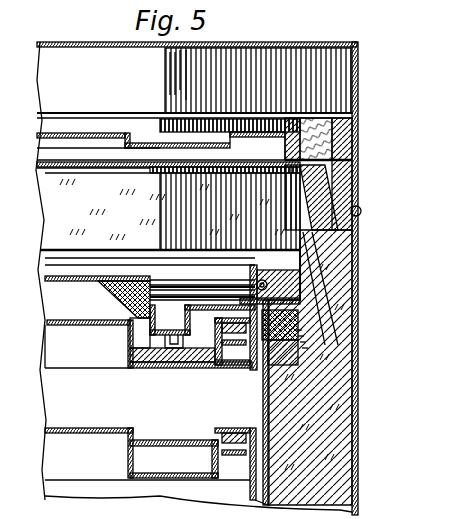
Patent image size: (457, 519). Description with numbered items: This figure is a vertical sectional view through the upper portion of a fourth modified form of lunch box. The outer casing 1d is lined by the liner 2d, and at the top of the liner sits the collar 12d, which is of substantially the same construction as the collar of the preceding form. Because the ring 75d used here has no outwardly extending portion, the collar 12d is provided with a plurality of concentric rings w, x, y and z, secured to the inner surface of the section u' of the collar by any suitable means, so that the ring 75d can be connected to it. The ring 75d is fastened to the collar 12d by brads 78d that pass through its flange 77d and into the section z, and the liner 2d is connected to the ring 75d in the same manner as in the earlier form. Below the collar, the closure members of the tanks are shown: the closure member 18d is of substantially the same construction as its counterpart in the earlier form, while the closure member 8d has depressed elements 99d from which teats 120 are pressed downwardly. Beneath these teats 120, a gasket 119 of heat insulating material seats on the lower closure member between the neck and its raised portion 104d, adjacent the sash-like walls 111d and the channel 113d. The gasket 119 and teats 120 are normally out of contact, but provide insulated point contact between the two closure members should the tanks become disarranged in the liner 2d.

The casing 1d is at (353, 396).
The liner 2d is at (275, 420).
The closure member 8d is at (62, 288).
The collar 12d is at (318, 252).
The closure member 18d is at (47, 215).
The ring 75d is at (282, 333).
The flange 77d is at (272, 350).
The brads 78d is at (272, 365).
The depressed elements 99d is at (182, 350).
The raised portion 104d is at (100, 323).
The sash rail 111d is at (68, 330).
The channel 113d is at (217, 346).
The gasket 119 is at (137, 368).
The teats 120 is at (160, 362).
The section of collar u' is at (347, 270).
The concentric ring w is at (300, 332).
The concentric ring x is at (302, 338).
The concentric ring y is at (304, 343).
The concentric ring z is at (306, 349).